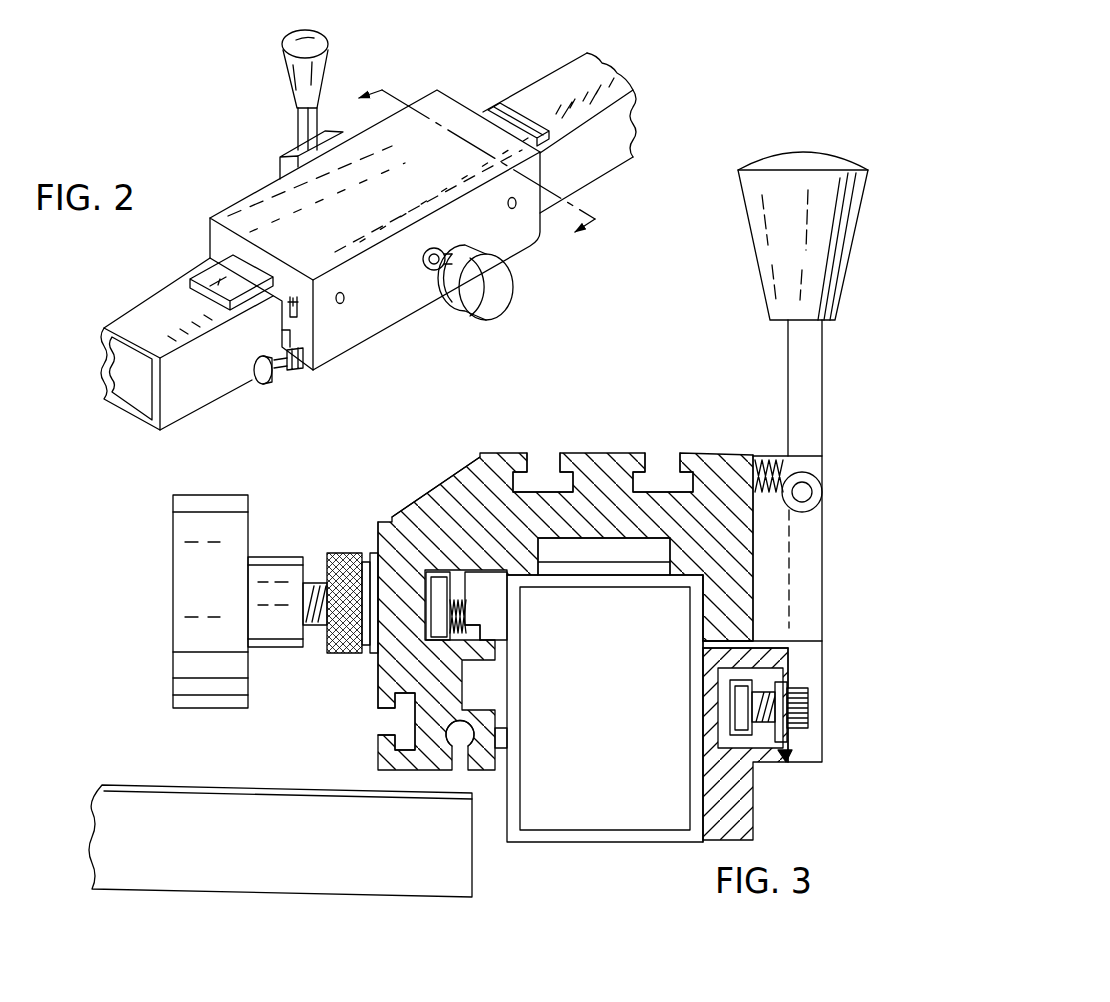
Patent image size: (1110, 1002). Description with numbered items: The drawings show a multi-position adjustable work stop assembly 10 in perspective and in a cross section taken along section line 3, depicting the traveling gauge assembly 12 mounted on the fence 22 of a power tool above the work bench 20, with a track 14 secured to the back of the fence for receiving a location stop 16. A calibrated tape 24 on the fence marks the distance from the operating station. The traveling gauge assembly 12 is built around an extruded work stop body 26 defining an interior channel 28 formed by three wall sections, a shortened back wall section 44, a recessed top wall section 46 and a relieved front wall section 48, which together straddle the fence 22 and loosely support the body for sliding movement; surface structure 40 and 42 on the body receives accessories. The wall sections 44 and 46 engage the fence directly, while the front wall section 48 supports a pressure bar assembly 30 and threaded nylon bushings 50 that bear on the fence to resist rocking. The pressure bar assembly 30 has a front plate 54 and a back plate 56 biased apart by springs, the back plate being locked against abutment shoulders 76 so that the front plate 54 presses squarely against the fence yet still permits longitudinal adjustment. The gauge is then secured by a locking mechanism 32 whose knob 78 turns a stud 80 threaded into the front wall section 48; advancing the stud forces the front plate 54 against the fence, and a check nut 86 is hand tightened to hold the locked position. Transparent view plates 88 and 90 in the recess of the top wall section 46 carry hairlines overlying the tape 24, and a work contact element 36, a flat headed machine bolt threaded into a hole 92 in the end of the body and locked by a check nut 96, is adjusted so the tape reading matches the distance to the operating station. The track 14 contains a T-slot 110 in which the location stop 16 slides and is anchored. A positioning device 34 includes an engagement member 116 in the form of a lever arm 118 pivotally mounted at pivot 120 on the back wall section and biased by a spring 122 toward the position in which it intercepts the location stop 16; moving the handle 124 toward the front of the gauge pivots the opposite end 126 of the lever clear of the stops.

In FIG. 2, the multi-position adjustable work stop assembly 10 is at (165, 140).
In FIG. 3, the multi-position adjustable work stop assembly 10 is at (690, 330).
In FIG. 2, the traveling gauge assembly 12 is at (260, 186).
In FIG. 3, the traveling gauge assembly 12 is at (436, 486).
In FIG. 2, the track 14 is at (84, 350).
In FIG. 3, the track 14 is at (790, 758).
In FIG. 3, the location stop 16 is at (810, 705).
In FIG. 3, the work bench 20 is at (283, 845).
In FIG. 2, the fence 22 is at (608, 156).
In FIG. 3, the fence 22 is at (585, 847).
In FIG. 2, the calibrated tape 24 is at (553, 100).
In FIG. 2, the work stop body 26 is at (440, 104).
In FIG. 3, the work stop body 26 is at (470, 500).
In FIG. 3, the interior channel 28 is at (700, 613).
In FIG. 2, the pressure bar assembly 30 is at (316, 318).
In FIG. 3, the pressure bar assembly 30 is at (484, 614).
In FIG. 2, the locking mechanism 32 is at (518, 280).
In FIG. 3, the locking mechanism 32 is at (283, 545).
In FIG. 2, the positioning device 34 is at (282, 152).
In FIG. 3, the positioning device 34 is at (824, 540).
In FIG. 2, the work contact element 36 is at (261, 386).
In FIG. 3, the surface structure 40 is at (547, 450).
In FIG. 3, the surface structure 42 is at (372, 725).
In FIG. 3, the shortened back wall section 44 is at (748, 575).
In FIG. 3, the recessed top wall section 46 is at (600, 470).
In FIG. 3, the relieved front wall section 48 is at (383, 672).
In FIG. 3, the nylon bushing 50 is at (508, 738).
In FIG. 3, the front plate 54 is at (496, 590).
In FIG. 3, the back plate 56 is at (442, 572).
In FIG. 3, the abutment shoulder 76 is at (470, 642).
In FIG. 2, the knob 78 is at (478, 300).
In FIG. 3, the knob 78 is at (185, 572).
In FIG. 3, the stud 80 is at (317, 582).
In FIG. 2, the check nut 86 is at (440, 248).
In FIG. 3, the check nut 86 is at (345, 553).
In FIG. 2, the transparent view plate 88 is at (510, 110).
In FIG. 2, the transparent view plate 90 is at (217, 262).
In FIG. 3, the hole 92 is at (455, 750).
In FIG. 2, the check nut 96 is at (297, 371).
In FIG. 3, the T-slot 110 is at (790, 650).
In FIG. 3, the engagement member 116 is at (810, 660).
In FIG. 3, the lever arm 118 is at (824, 350).
In FIG. 3, the pivot 120 is at (814, 481).
In FIG. 3, the spring 122 is at (768, 456).
In FIG. 2, the handle 124 is at (330, 62).
In FIG. 3, the handle 124 is at (838, 258).
In FIG. 3, the opposite end of lever 126 is at (808, 745).
In FIG. 2, the section line 3 is at (467, 176).